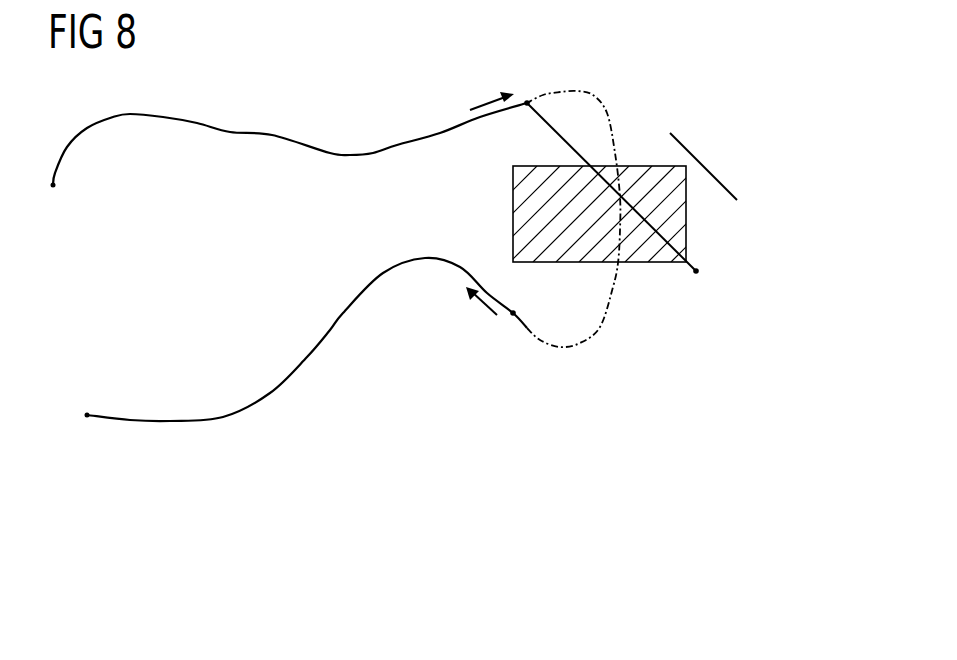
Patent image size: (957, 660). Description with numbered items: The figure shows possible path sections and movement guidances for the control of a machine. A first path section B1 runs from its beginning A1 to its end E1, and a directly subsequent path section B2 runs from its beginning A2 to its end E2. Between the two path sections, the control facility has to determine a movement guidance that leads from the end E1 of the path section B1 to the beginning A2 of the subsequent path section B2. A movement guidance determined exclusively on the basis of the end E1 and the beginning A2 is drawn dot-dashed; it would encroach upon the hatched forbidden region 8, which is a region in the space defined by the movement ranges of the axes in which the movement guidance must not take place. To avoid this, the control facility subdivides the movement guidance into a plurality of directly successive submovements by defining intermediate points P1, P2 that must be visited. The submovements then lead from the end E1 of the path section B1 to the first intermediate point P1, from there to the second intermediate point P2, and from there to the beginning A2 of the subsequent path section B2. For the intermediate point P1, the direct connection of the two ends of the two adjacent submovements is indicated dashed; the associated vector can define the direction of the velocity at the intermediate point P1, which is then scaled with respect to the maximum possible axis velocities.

The forbidden region 8 is at (643, 262).
The beginning of path section A1 is at (53, 189).
The path section B1 is at (272, 135).
The end of path section E1 is at (527, 100).
The beginning of subsequent path section A2 is at (513, 316).
The subsequent path section B2 is at (223, 418).
The end of subsequent path section E2 is at (87, 418).
The first intermediate point P1 is at (703, 166).
The second intermediate point P2 is at (699, 271).